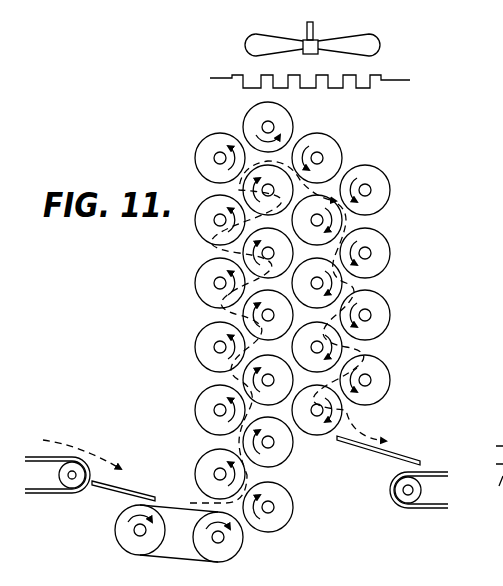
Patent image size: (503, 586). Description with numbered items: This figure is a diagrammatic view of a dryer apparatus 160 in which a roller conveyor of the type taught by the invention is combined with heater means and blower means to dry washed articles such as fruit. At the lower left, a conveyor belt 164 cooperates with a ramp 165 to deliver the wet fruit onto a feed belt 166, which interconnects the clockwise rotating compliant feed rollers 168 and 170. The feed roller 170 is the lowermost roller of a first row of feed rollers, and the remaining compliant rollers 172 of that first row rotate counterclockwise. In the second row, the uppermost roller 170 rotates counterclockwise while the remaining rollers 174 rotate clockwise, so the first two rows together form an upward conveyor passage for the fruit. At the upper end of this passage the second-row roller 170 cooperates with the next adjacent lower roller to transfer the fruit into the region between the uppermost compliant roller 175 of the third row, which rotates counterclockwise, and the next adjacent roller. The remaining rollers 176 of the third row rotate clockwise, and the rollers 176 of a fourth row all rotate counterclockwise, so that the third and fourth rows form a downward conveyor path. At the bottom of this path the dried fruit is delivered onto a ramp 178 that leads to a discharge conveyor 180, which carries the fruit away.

The apparatus 160 is at (502, 6).
The conveyor belt 164 is at (32, 453).
The ramp 165 is at (130, 490).
The feed belt 166 is at (165, 508).
The compliant feed roller 168 is at (127, 527).
The feed roller 170 is at (293, 119).
The compliant rollers 172 is at (206, 265).
The rollers 174 is at (283, 495).
The compliant roller 175 is at (340, 146).
The rollers 176 is at (372, 234).
The ramp 178 is at (402, 446).
The discharge conveyor 180 is at (435, 470).